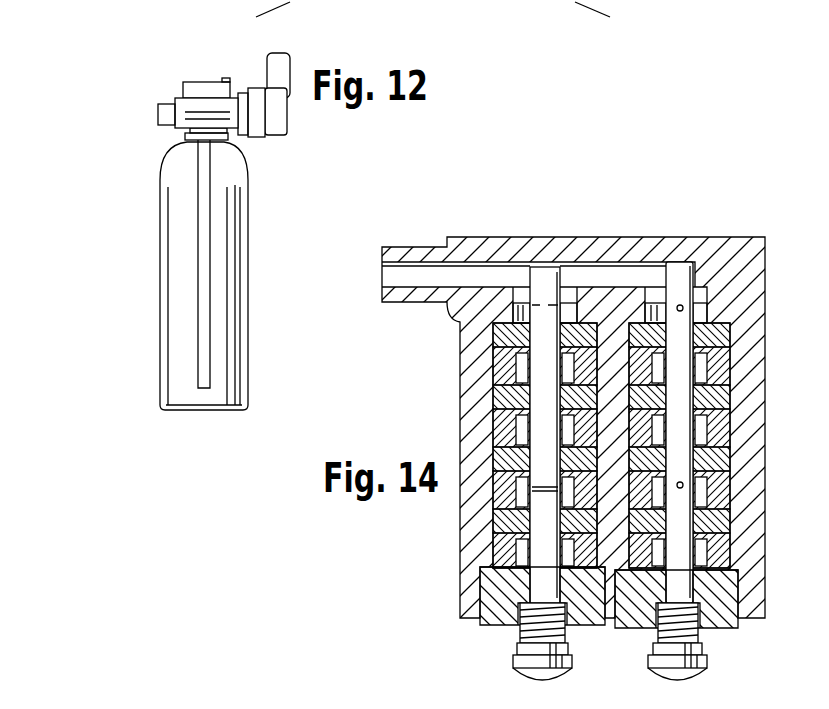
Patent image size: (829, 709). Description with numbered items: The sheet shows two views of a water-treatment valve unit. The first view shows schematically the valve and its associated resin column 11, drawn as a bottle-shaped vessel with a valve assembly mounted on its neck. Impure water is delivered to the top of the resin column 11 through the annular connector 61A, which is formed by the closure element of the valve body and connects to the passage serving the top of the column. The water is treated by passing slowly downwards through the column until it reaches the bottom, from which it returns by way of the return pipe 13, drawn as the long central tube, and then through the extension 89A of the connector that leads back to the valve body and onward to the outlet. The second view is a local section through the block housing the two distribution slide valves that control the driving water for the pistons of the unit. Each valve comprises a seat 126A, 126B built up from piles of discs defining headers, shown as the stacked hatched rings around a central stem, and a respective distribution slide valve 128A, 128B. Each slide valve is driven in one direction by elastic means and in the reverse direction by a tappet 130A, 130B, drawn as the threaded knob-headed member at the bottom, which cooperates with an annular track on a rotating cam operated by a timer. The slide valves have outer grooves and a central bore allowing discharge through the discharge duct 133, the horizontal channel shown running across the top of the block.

In FIG. 12, the resin column 11 is at (235, 332).
In FIG. 12, the return pipe 13 is at (203, 292).
In FIG. 12, the annular connector 61A is at (186, 143).
In FIG. 12, the extension of the connector 89A is at (229, 138).
In FIG. 14, the discharge duct 133 is at (413, 268).
In FIG. 14, the seat 126A is at (718, 318).
In FIG. 14, the seat 126B is at (512, 308).
In FIG. 14, the distribution slide valve 128A is at (724, 628).
In FIG. 14, the distribution slide valve 128B is at (487, 572).
In FIG. 14, the tappet 130A is at (663, 672).
In FIG. 14, the tappet 130B is at (525, 672).